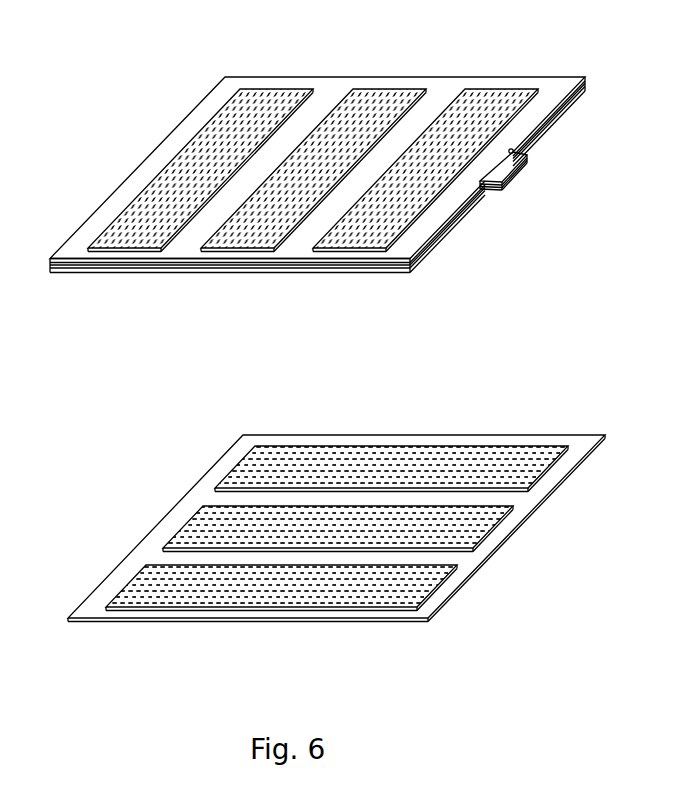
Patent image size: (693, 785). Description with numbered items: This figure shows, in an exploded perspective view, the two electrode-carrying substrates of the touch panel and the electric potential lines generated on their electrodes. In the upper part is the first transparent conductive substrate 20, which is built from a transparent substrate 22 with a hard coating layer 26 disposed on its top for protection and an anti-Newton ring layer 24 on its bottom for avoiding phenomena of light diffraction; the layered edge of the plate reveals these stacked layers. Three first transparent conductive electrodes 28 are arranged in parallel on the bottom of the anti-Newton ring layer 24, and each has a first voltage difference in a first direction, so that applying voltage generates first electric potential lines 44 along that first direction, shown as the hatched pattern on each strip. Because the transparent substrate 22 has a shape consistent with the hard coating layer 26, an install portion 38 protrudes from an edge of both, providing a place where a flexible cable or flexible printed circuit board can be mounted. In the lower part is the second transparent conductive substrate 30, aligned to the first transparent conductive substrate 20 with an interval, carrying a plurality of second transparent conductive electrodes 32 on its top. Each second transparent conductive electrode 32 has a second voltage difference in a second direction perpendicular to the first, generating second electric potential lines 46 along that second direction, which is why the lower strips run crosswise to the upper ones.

The first transparent conductive substrate 20 is at (354, 151).
The transparent substrate 22 is at (587, 87).
The anti-Newton ring layer 24 is at (355, 151).
The hard coating layer 26 is at (560, 115).
The first transparent conductive electrode 28 is at (279, 87).
The second transparent conductive substrate 30 is at (333, 495).
The second transparent conductive electrode 32 is at (415, 440).
The install portion 38 is at (513, 177).
The first electric potential lines 44 is at (360, 113).
The second electric potential lines 46 is at (307, 457).